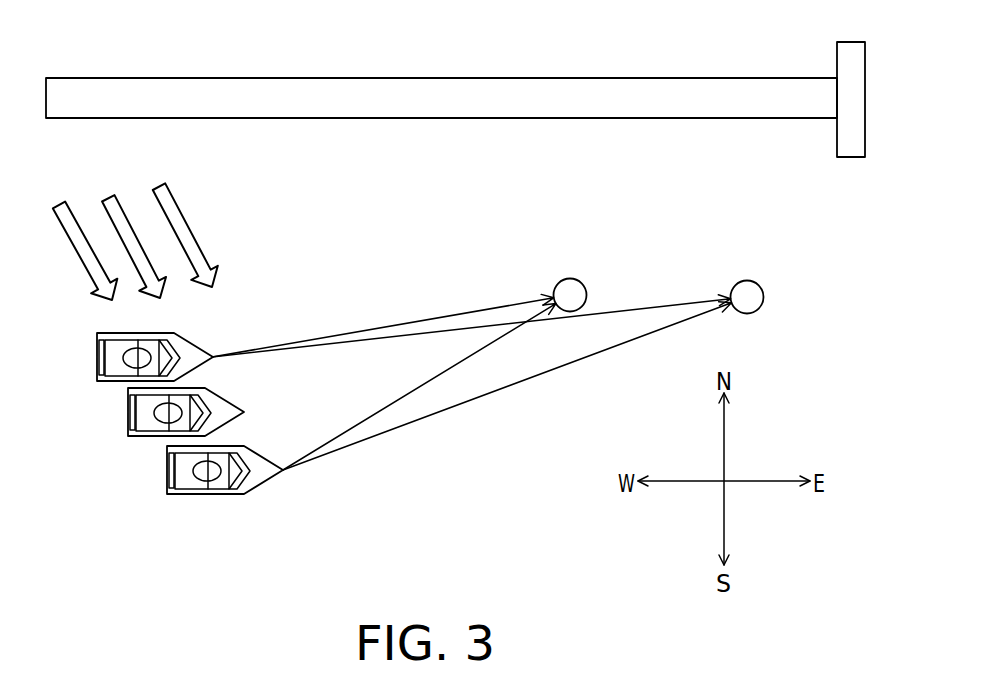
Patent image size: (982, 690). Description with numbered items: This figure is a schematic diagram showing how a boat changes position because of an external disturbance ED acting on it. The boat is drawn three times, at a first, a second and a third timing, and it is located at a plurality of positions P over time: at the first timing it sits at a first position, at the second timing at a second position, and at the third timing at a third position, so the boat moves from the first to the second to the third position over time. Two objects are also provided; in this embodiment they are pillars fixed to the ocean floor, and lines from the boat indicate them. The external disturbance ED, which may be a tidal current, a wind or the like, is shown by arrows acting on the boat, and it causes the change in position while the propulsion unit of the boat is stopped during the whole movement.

The positions P is at (712, 78).
The external disturbance ED is at (72, 210).